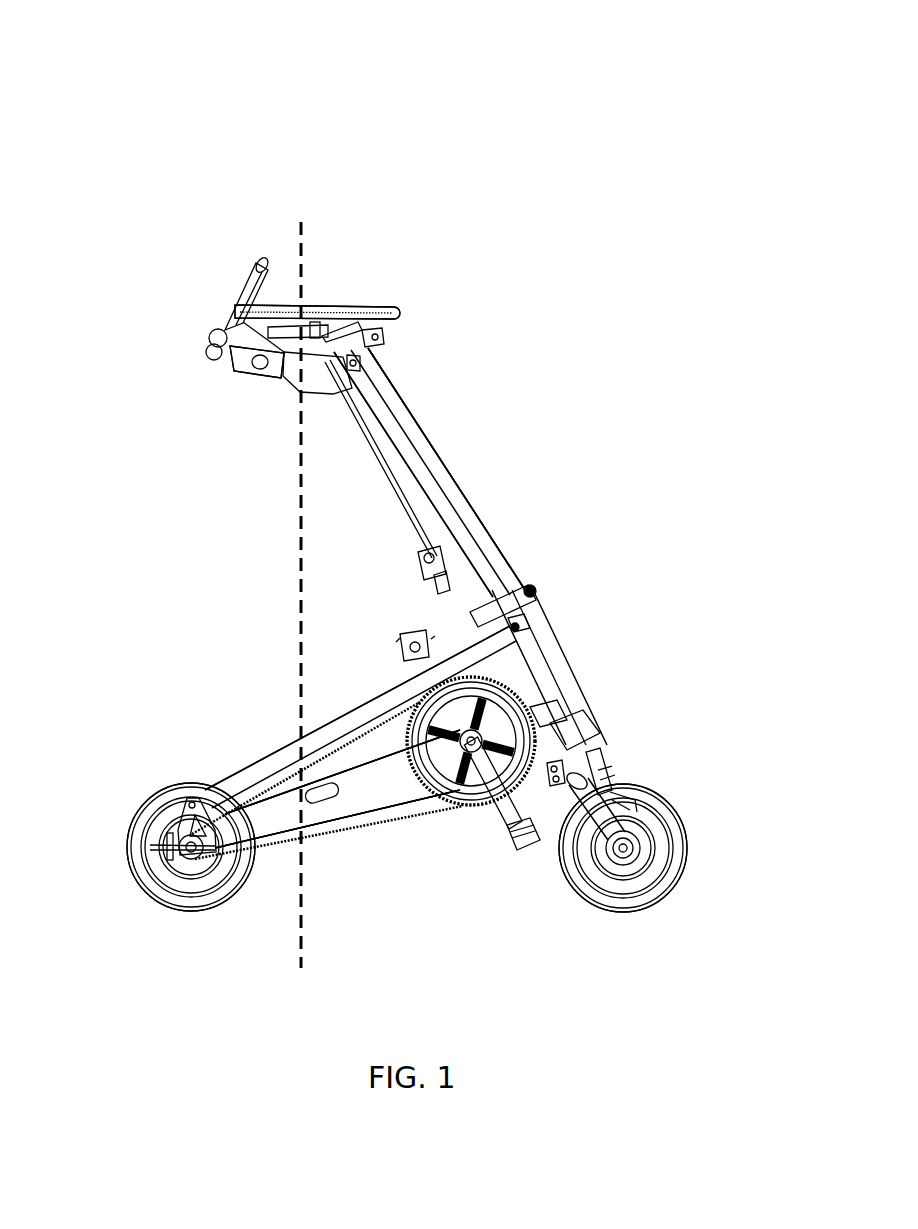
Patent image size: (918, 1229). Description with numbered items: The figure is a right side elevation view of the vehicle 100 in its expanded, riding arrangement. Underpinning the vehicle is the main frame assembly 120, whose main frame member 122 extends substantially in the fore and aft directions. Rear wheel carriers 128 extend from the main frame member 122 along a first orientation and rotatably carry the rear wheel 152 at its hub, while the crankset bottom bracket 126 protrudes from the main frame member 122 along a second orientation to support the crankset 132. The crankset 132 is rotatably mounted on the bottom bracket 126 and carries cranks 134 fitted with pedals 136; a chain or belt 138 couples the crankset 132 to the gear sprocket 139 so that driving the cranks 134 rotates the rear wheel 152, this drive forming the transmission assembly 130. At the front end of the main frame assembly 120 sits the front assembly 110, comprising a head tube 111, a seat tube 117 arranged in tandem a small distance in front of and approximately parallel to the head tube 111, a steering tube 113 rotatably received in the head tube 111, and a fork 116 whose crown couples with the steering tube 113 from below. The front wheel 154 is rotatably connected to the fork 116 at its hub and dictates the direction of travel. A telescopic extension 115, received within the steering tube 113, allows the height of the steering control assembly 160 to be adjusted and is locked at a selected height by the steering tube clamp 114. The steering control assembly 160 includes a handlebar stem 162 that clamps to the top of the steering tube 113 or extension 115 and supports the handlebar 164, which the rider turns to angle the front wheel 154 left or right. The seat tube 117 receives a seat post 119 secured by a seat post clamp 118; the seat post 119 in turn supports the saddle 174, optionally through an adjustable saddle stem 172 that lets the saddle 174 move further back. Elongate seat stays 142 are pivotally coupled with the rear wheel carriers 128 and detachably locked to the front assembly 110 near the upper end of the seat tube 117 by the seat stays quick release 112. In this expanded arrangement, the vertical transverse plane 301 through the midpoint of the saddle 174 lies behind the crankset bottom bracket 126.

The vehicle 100 is at (688, 113).
The front assembly 110 is at (668, 491).
The head tube 111 is at (540, 695).
The seat stays quick release 112 is at (520, 628).
The steering tube 113 is at (467, 565).
The steering tube clamp 114 is at (427, 555).
The telescopic extension 115 is at (390, 433).
The fork 116 is at (612, 801).
The seat tube 117 is at (563, 665).
The seat post clamp 118 is at (533, 588).
The seat post 119 is at (467, 503).
The main frame assembly 120 is at (394, 817).
The main frame member 122 is at (367, 803).
The crankset bottom bracket 126 is at (473, 740).
The rear wheel carriers 128 is at (270, 827).
The transmission assembly 130 is at (441, 901).
The crankset 132 is at (430, 707).
The cranks 134 is at (498, 807).
The pedals 136 is at (410, 643).
The chain or belt 138 is at (443, 810).
The gear sprocket 139 is at (190, 858).
The seat stays 142 is at (320, 723).
The rear wheel 152 is at (175, 907).
The front wheel 154 is at (670, 905).
The steering control assembly 160 is at (241, 456).
The handlebar stem 162 is at (308, 383).
The handlebar 164 is at (215, 378).
The adjustable saddle stem 172 is at (335, 346).
The saddle 174 is at (400, 316).
The vertical transverse plane 301 is at (303, 968).